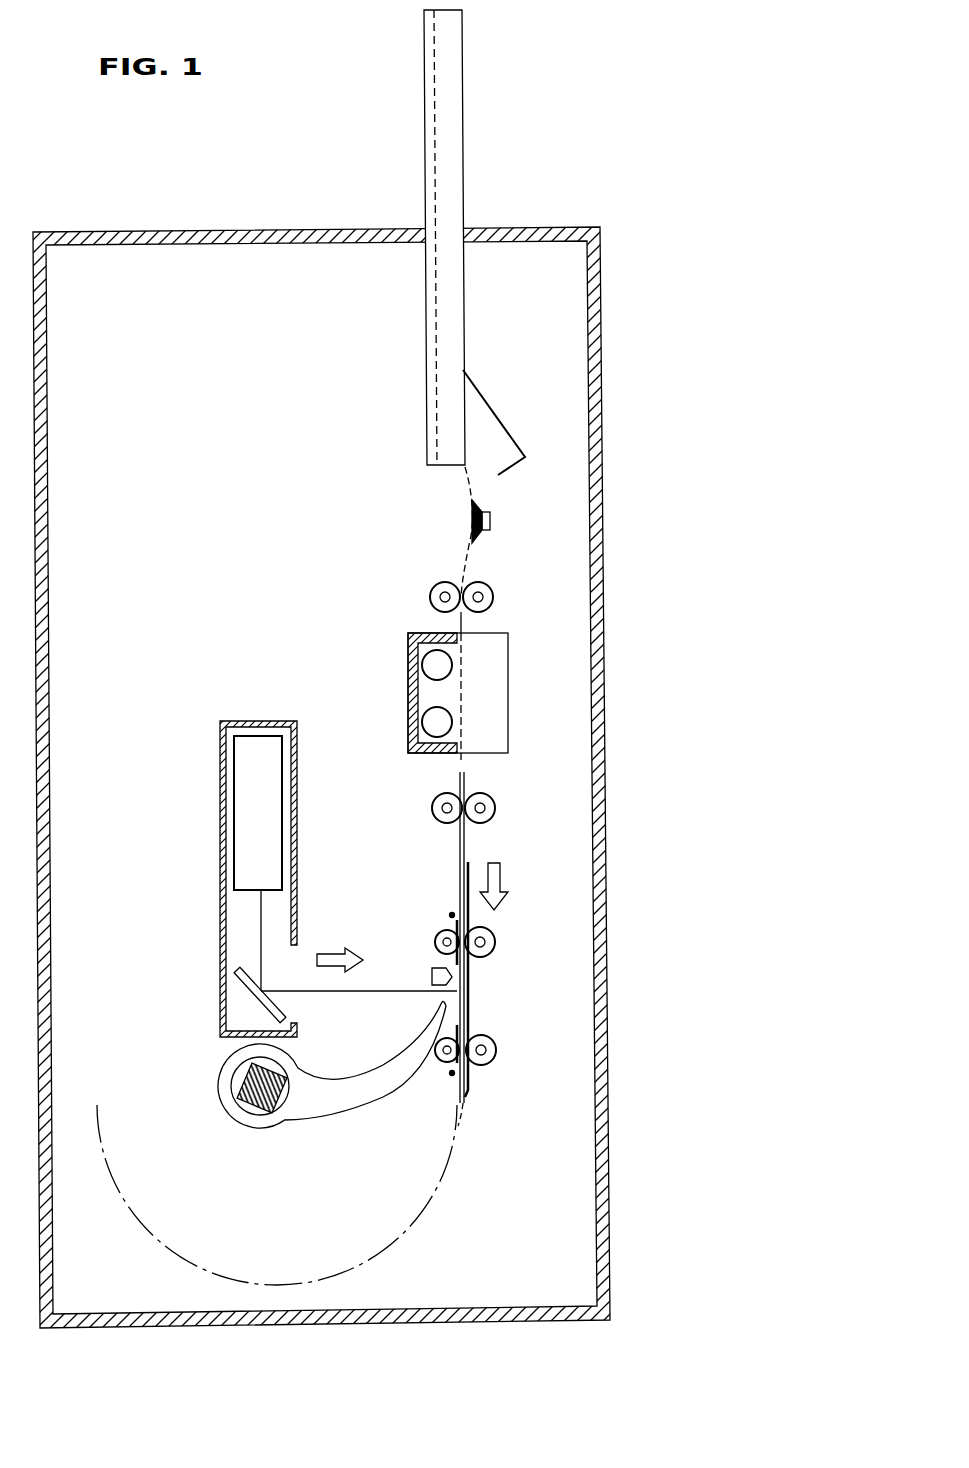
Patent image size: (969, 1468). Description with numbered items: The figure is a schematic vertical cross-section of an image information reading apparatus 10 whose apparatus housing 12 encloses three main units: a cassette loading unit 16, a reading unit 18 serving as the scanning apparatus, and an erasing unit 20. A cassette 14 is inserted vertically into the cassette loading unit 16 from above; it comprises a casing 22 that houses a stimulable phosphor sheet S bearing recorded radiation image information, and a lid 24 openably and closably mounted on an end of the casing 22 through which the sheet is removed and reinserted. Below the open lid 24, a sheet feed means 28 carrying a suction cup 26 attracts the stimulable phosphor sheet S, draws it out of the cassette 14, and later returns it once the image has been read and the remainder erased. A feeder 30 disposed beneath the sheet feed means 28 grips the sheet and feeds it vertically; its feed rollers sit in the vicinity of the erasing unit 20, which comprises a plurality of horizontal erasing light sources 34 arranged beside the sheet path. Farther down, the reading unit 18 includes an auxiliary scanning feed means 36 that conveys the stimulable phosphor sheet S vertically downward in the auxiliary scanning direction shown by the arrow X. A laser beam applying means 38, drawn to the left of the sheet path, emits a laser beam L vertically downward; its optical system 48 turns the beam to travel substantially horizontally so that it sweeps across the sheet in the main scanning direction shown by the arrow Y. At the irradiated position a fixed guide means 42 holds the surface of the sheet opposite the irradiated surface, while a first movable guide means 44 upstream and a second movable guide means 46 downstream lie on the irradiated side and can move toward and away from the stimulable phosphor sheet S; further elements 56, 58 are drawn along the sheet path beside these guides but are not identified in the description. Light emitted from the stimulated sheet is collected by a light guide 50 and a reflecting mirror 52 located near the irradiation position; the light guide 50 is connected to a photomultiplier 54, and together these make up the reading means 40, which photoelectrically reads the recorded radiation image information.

The image information reading apparatus 10 is at (651, 135).
The apparatus housing 12 is at (610, 1048).
The cassette 14 is at (466, 167).
The cassette loading unit 16 is at (532, 414).
The reading unit 18 is at (532, 944).
The erasing unit 20 is at (509, 674).
The casing 22 is at (424, 143).
The lid 24 is at (464, 375).
The suction cup 26 is at (492, 518).
The sheet feed means 28 is at (510, 502).
The feeder 30 is at (478, 571).
The erasing light sources 34 is at (408, 669).
The auxiliary scanning feed means 36 is at (474, 904).
The laser beam applying means 38 is at (257, 718).
The reading means 40 is at (313, 1102).
The fixed guide means 42 is at (470, 983).
The first movable guide means 44 is at (452, 915).
The second movable guide means 46 is at (452, 1073).
The optical system 48 is at (222, 985).
The light guide 50 is at (320, 1103).
The reflecting mirror 52 is at (432, 977).
The photomultiplier 54 is at (262, 1128).
The pinch roller 56 is at (434, 942).
The discharge roller pair 58 is at (497, 1050).
The stimulable phosphor sheet S is at (458, 849).
The auxiliary scanning direction arrow X is at (494, 872).
The main scanning direction arrow Y is at (340, 949).
The laser beam L is at (340, 992).